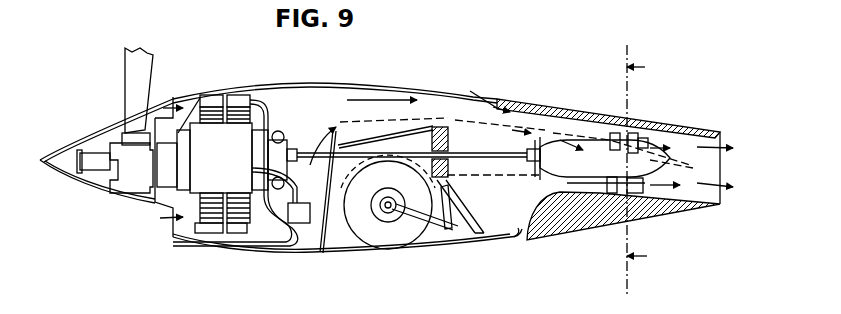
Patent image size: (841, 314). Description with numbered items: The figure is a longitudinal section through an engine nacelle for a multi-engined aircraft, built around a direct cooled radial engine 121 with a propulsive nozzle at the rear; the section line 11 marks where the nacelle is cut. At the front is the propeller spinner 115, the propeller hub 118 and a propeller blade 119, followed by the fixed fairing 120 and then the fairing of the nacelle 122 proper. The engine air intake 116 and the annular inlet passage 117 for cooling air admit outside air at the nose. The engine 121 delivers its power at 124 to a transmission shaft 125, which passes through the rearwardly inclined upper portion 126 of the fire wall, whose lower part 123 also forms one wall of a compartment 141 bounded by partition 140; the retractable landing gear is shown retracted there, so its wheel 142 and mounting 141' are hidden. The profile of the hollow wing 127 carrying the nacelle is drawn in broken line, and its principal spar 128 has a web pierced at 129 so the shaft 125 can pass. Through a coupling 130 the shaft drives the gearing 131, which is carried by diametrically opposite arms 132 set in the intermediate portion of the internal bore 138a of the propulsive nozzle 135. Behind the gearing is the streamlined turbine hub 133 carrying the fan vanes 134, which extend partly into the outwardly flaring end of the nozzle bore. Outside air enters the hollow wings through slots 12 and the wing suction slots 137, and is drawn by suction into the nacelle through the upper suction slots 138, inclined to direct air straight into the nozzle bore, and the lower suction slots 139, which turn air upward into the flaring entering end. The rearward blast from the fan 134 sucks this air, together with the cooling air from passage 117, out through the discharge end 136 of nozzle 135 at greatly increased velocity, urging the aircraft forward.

The section line 11 is at (643, 171).
The slots 12 is at (553, 127).
The spinner 115 is at (113, 200).
The air intake 116 is at (173, 237).
The inlet passage 117 is at (175, 112).
The propeller hub 118 is at (137, 177).
The propeller blade 119 is at (150, 62).
The fixed fairing 120 is at (159, 220).
The engine 121 is at (217, 183).
The fairing of the nacelle 122 is at (267, 255).
The lower part of the fire wall 123 is at (329, 249).
The power delivery point 124 is at (303, 150).
The transmission shaft 125 is at (308, 162).
The upper portion of the fire wall 126 is at (377, 137).
The wing profile outline 127 is at (363, 130).
The principal spar 128 is at (439, 130).
The spar web opening 129 is at (450, 122).
The coupling 130 is at (540, 137).
The gearing 131 is at (590, 150).
The arms 132 is at (610, 133).
The turbine hub 133 is at (632, 128).
The fan vanes 134 is at (647, 137).
The propulsive nozzle 135 is at (690, 127).
The discharge end 136 is at (727, 140).
The suction slots 137 is at (597, 183).
The upper suction slots 138 is at (492, 97).
The internal bore 138a is at (605, 200).
The lower suction slots 139 is at (518, 235).
The partition 140 is at (483, 229).
The landing gear compartment 141 is at (388, 218).
The landing gear mounting 141' is at (425, 233).
The wheel 142 is at (393, 240).